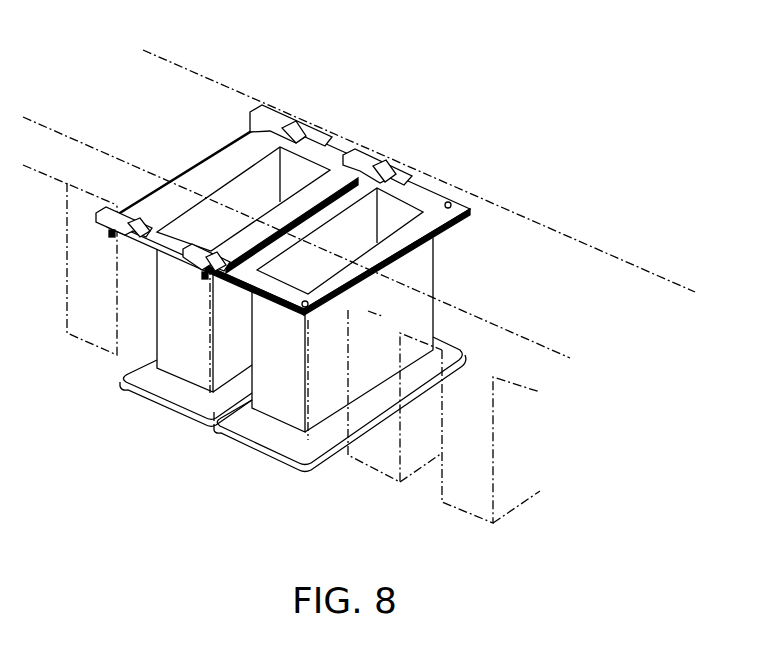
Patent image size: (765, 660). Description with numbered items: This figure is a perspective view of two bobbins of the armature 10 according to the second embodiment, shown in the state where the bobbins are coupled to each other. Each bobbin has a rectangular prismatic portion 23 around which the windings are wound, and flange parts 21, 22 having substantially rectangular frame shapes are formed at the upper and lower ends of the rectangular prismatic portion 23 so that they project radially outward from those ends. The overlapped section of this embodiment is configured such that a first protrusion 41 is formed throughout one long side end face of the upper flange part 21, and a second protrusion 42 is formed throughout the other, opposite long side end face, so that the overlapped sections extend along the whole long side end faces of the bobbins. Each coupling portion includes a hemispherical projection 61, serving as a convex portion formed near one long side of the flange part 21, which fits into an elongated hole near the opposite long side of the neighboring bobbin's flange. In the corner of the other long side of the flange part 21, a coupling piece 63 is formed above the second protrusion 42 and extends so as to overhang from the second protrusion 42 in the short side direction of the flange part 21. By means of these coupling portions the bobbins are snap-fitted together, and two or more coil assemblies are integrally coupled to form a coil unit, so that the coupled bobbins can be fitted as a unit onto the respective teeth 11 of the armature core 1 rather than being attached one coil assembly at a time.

The armature core 1 is at (596, 256).
The armature 10 is at (640, 96).
The teeth 11 is at (77, 340).
The flange part 21 is at (304, 261).
The flange part 22 is at (194, 430).
The rectangular prismatic portion 23 is at (436, 265).
The first protrusion 41 is at (308, 217).
The second protrusion 42 is at (216, 183).
The hemispherical projection 61 is at (451, 200).
The coupling piece 63 is at (277, 117).